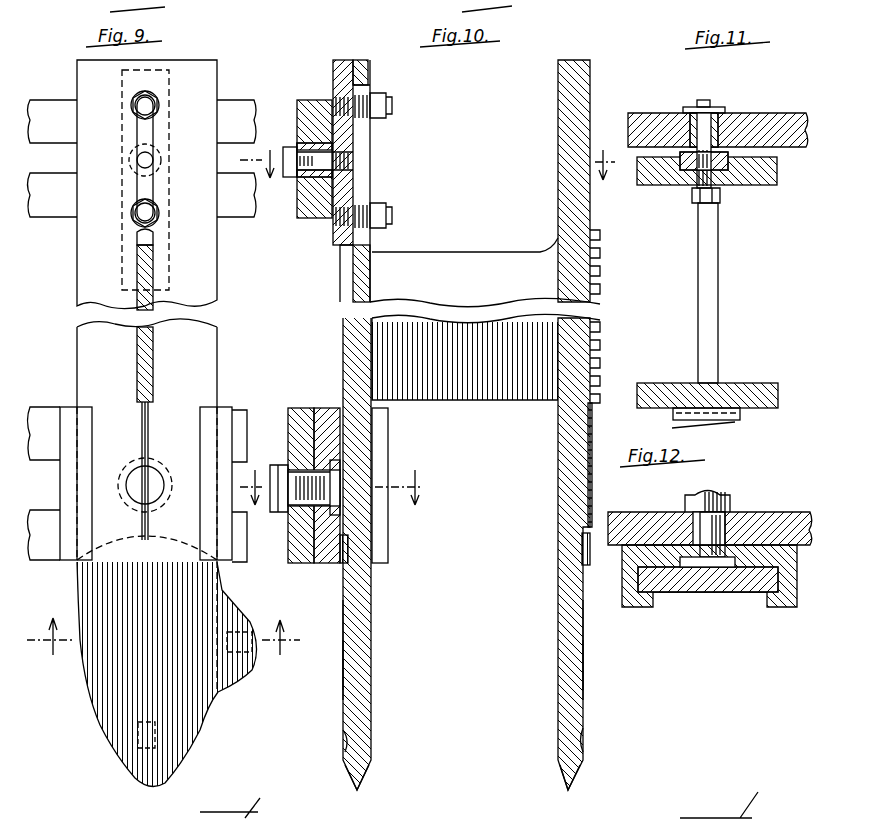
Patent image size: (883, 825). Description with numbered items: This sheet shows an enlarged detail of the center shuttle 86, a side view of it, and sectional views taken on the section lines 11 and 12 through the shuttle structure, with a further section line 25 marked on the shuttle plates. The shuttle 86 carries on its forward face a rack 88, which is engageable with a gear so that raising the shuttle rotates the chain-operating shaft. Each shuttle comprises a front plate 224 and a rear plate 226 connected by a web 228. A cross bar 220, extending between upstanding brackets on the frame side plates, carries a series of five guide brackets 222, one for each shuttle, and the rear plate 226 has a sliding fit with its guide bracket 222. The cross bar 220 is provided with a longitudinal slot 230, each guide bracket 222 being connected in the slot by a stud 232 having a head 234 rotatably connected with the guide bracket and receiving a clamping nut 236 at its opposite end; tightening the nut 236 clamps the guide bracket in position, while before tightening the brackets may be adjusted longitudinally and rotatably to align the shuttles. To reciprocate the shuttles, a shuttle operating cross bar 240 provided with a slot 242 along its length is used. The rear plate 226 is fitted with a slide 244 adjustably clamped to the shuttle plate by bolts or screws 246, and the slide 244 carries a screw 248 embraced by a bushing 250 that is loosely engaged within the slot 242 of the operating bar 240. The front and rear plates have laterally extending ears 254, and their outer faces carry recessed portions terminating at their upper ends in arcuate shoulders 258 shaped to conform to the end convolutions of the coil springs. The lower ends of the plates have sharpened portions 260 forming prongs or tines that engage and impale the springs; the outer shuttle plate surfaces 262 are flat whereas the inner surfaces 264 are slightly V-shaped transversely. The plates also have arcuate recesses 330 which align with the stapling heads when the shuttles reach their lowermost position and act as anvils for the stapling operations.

In FIG. 9, the section line 11- 11 is at (264, 150).
In FIG. 10, the section line 11- 11 is at (606, 149).
In FIG. 10, the section line 12- 12 is at (335, 474).
In FIG. 9, the section line 25- 25 is at (163, 651).
In FIG. 9, the center shuttle 86 is at (246, 77).
In FIG. 10, the center shuttle 86 is at (458, 150).
In FIG. 11, the center shuttle 86 is at (750, 265).
In FIG. 10, the rack 88 is at (572, 342).
In FIG. 11, the rack 88 is at (688, 410).
In FIG. 9, the cross bar 220 is at (44, 413).
In FIG. 10, the cross bar 220 is at (316, 410).
In FIG. 12, the cross bar 220 is at (797, 515).
In FIG. 9, the guide bracket 222 is at (212, 420).
In FIG. 12, the guide bracket 222 is at (790, 598).
In FIG. 10, the front plate 224 is at (570, 452).
In FIG. 11, the front plate 224 is at (750, 383).
In FIG. 9, the rear plate 226 is at (195, 287).
In FIG. 10, the rear plate 226 is at (360, 587).
In FIG. 11, the rear plate 226 is at (754, 190).
In FIG. 12, the rear plate 226 is at (680, 582).
In FIG. 9, the web 228 is at (152, 352).
In FIG. 10, the web 228 is at (470, 396).
In FIG. 11, the web 228 is at (705, 285).
In FIG. 9, the longitudinal slot 230 is at (48, 560).
In FIG. 9, the stud 232 is at (137, 477).
In FIG. 10, the stud 232 is at (328, 482).
In FIG. 12, the stud 232 is at (706, 528).
In FIG. 12, the head 234 is at (755, 567).
In FIG. 12, the clamping nut 236 is at (686, 500).
In FIG. 9, the shuttle operating cross bar 240 is at (50, 108).
In FIG. 10, the shuttle operating cross bar 240 is at (315, 222).
In FIG. 11, the shuttle operating cross bar 240 is at (795, 148).
In FIG. 9, the slot 242 is at (56, 170).
In FIG. 10, the slide 244 is at (342, 78).
In FIG. 11, the slide 244 is at (685, 168).
In FIG. 9, the bolts or screws 246 is at (152, 100).
In FIG. 10, the bolts or screws 246 is at (388, 107).
In FIG. 10, the screw 248 is at (352, 156).
In FIG. 11, the screw 248 is at (715, 109).
In FIG. 10, the bushing 250 is at (313, 100).
In FIG. 11, the bushing 250 is at (683, 125).
In FIG. 9, the laterally extending ears 254 is at (232, 672).
In FIG. 9, the arcuate shoulders 258 is at (117, 540).
In FIG. 10, the arcuate shoulders 258 is at (348, 540).
In FIG. 9, the sharpened portions 260 is at (146, 758).
In FIG. 10, the sharpened portions 260 is at (373, 770).
In FIG. 10, the shuttle plate surfaces 262 is at (348, 663).
In FIG. 10, the inner surfaces 264 is at (372, 690).
In FIG. 9, the arcuate recesses 330 is at (247, 632).
In FIG. 10, the arcuate recesses 330 is at (347, 735).